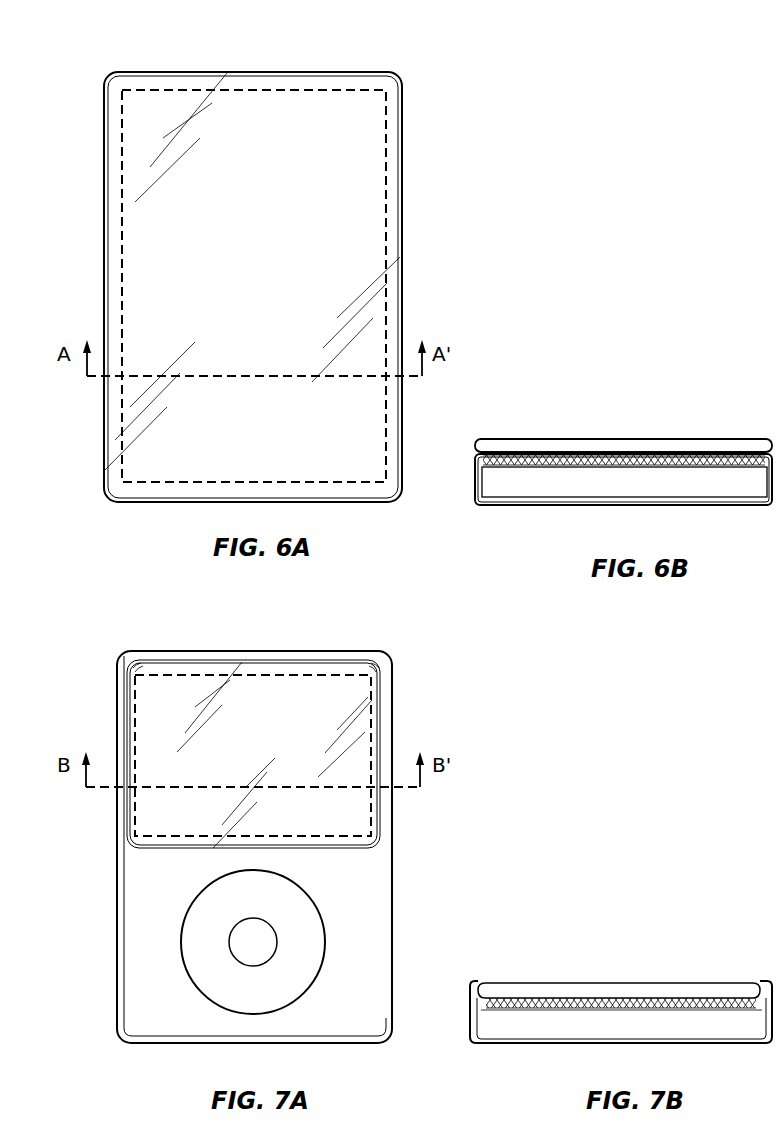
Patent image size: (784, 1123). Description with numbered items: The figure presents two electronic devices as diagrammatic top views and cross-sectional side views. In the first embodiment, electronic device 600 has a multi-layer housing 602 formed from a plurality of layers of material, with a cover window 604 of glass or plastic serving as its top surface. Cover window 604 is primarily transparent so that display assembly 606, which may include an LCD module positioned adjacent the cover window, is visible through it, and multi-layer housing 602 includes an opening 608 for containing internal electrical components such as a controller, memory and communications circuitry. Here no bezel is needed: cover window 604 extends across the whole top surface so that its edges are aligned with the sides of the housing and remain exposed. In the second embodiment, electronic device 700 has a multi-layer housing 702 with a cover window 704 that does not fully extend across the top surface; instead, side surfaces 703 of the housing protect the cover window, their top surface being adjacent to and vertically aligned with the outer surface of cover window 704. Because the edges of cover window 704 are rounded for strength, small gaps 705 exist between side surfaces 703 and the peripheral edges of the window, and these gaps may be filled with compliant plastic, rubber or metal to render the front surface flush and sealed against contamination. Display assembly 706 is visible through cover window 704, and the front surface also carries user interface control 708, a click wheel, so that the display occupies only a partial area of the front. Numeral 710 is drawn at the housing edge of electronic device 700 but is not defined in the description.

In FIG. 6A, the electronic device 600 is at (80, 56).
In FIG. 6A, the multi-layer housing 602 is at (103, 243).
In FIG. 6B, the multi-layer housing 602 is at (513, 506).
In FIG. 6A, the cover window 604 is at (366, 258).
In FIG. 6B, the cover window 604 is at (665, 446).
In FIG. 6A, the display assembly 606 is at (385, 140).
In FIG. 6B, the display assembly 606 is at (717, 466).
In FIG. 6B, the opening 608 is at (572, 483).
In FIG. 7A, the electronic device 700 is at (84, 642).
In FIG. 7A, the multi-layer housing 702 is at (117, 931).
In FIG. 7B, the multi-layer housing 702 is at (490, 1044).
In FIG. 7A, the side surfaces 703 is at (190, 656).
In FIG. 7B, the side surfaces 703 is at (474, 975).
In FIG. 7A, the cover window 704 is at (360, 812).
In FIG. 7B, the cover window 704 is at (660, 990).
In FIG. 7B, the gaps 705 is at (483, 980).
In FIG. 7A, the display assembly 706 is at (382, 752).
In FIG. 7B, the display assembly 706 is at (712, 1008).
In FIG. 7A, the user interface control 708 is at (323, 935).
In FIG. 7B, the user interface control 708 is at (537, 1025).
In FIG. 7A, the housing edge 710 is at (300, 655).